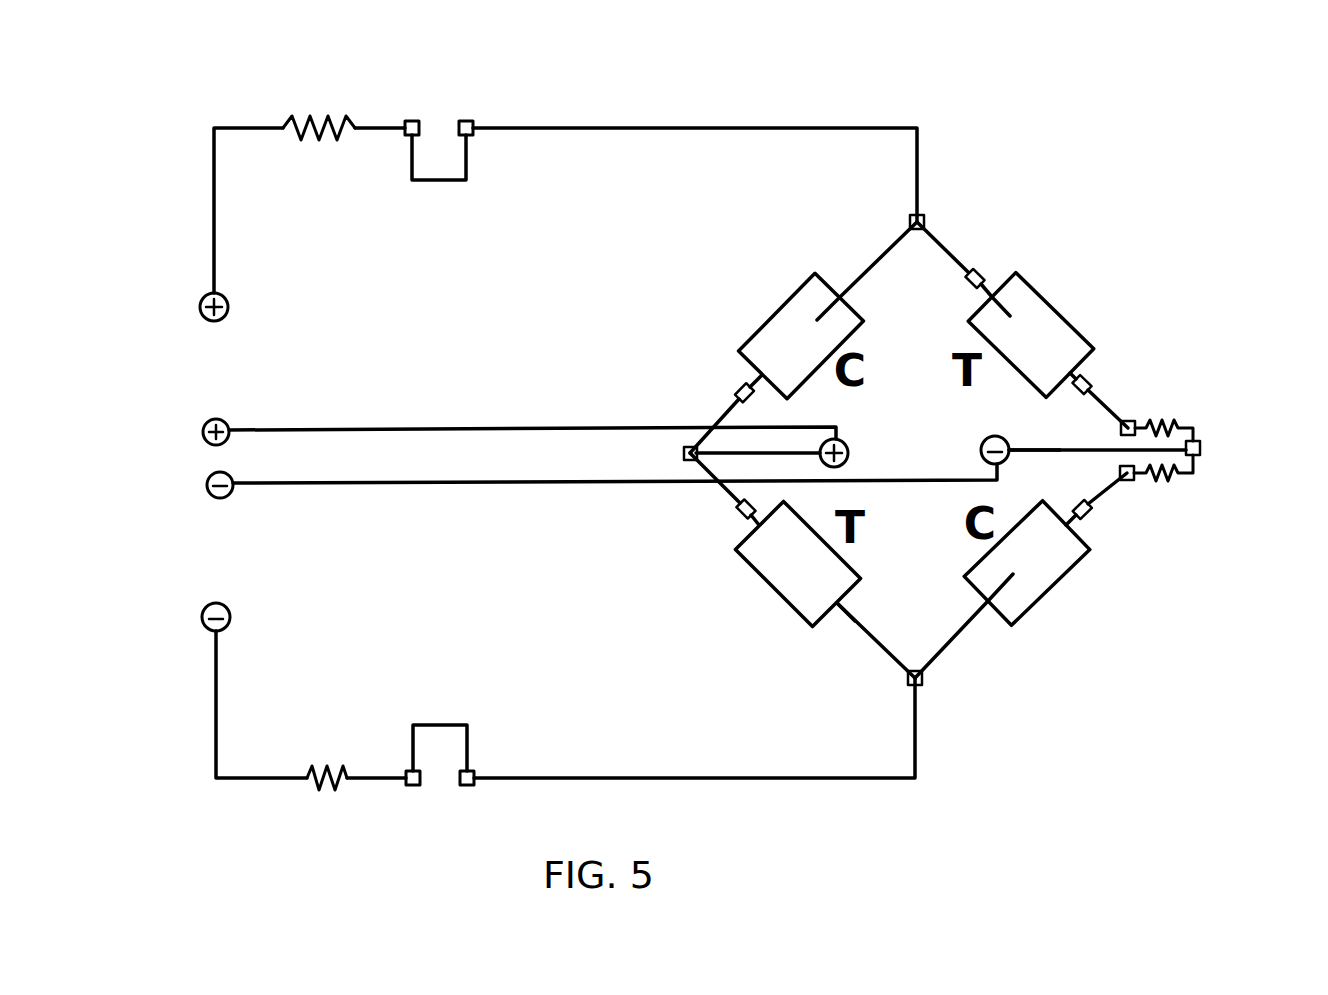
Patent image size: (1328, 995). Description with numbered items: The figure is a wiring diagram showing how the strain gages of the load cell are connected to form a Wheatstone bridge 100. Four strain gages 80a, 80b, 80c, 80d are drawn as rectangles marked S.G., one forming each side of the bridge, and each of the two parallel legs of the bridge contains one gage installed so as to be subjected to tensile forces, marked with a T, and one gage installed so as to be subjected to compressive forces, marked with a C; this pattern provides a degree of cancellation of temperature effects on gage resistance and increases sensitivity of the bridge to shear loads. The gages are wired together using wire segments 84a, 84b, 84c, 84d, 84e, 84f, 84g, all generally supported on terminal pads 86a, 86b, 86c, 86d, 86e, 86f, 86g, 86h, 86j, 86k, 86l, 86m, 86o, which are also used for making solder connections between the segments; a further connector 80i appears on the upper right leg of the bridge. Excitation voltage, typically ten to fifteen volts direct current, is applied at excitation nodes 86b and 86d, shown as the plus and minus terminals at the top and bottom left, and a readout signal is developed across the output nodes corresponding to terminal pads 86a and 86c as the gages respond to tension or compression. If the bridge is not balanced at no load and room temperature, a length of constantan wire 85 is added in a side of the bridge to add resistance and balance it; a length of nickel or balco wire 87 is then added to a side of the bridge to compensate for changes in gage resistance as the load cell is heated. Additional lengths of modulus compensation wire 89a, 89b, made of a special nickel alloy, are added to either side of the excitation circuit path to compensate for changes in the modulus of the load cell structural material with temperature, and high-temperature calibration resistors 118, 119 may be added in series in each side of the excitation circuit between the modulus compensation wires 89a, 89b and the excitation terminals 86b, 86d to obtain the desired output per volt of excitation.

The Wheatstone bridge 100 is at (556, 367).
The strain gage 80a is at (768, 315).
The strain gage 80b is at (1058, 317).
The strain gage 80c is at (790, 606).
The strain gage 80d is at (1060, 590).
The connector 80i is at (984, 272).
The wire segment 84a is at (722, 418).
The wire segment 84b is at (945, 243).
The wire segment 84c is at (1103, 409).
The wire segment 84d is at (1106, 494).
The wire segment 84e is at (965, 640).
The wire segment 84f is at (730, 500).
The wire segment 84g is at (1030, 448).
The constantan wire 85 is at (1190, 428).
The nickel or balco wire 87 is at (1185, 478).
The terminal pad 86a is at (228, 422).
The terminal pad 86b is at (226, 297).
The terminal pad 86c is at (230, 493).
The terminal pad 86d is at (228, 613).
The terminal pad 86e is at (738, 387).
The terminal pad 86f is at (925, 218).
The terminal pad 86g is at (740, 520).
The terminal pad 86h is at (925, 686).
The terminal pad 86j is at (1091, 381).
The terminal pad 86k is at (1120, 428).
The terminal pad 86l is at (1205, 448).
The terminal pad 86m is at (1119, 473).
The terminal pad 86o is at (1092, 517).
The modulus compensation wire 89a is at (437, 182).
The modulus compensation wire 89b is at (440, 725).
The high-temperature calibration resistor 118 is at (333, 762).
The high-temperature calibration resistor 119 is at (316, 116).